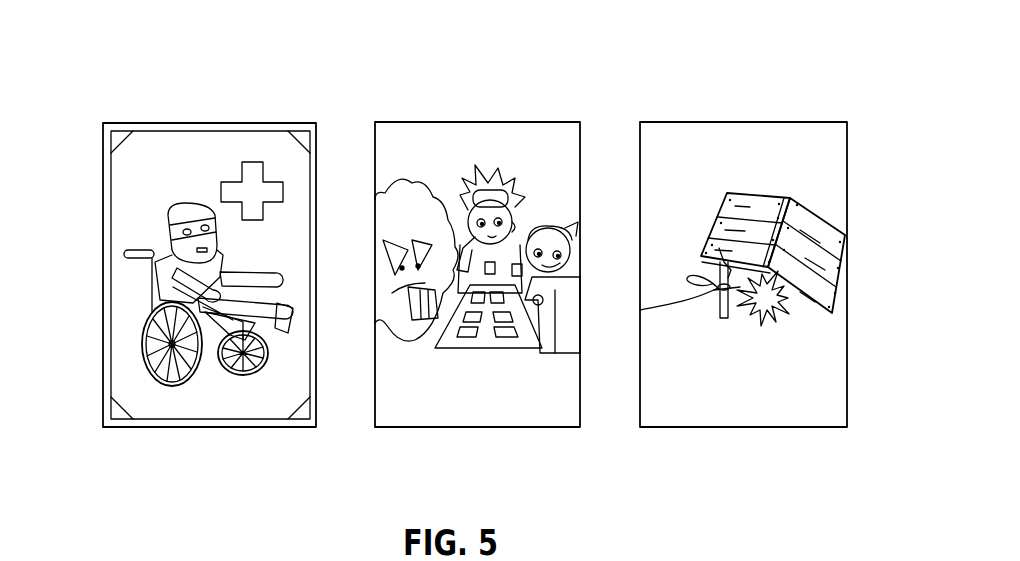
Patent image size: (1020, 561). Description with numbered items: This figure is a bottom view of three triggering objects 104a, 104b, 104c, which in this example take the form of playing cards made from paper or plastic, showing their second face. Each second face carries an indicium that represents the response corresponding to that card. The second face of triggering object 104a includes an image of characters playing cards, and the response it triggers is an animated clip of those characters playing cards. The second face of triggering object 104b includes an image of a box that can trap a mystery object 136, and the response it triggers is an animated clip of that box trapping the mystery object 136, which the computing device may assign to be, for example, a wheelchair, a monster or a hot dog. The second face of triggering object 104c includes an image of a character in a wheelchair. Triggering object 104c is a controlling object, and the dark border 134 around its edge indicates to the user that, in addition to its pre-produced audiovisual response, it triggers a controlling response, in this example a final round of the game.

The triggering object 104a is at (485, 122).
The triggering object 104b is at (705, 122).
The triggering object 104c is at (213, 122).
The dark border 134 is at (155, 428).
The mystery object 136 is at (790, 312).